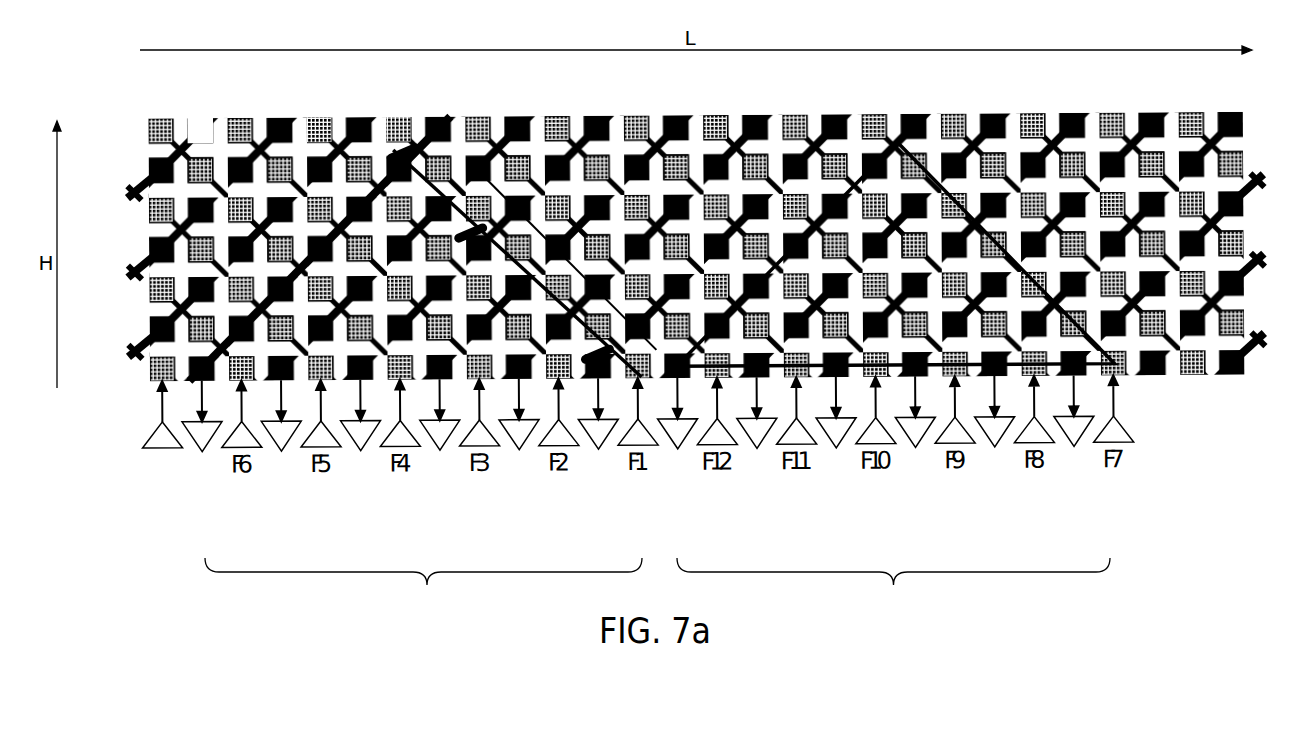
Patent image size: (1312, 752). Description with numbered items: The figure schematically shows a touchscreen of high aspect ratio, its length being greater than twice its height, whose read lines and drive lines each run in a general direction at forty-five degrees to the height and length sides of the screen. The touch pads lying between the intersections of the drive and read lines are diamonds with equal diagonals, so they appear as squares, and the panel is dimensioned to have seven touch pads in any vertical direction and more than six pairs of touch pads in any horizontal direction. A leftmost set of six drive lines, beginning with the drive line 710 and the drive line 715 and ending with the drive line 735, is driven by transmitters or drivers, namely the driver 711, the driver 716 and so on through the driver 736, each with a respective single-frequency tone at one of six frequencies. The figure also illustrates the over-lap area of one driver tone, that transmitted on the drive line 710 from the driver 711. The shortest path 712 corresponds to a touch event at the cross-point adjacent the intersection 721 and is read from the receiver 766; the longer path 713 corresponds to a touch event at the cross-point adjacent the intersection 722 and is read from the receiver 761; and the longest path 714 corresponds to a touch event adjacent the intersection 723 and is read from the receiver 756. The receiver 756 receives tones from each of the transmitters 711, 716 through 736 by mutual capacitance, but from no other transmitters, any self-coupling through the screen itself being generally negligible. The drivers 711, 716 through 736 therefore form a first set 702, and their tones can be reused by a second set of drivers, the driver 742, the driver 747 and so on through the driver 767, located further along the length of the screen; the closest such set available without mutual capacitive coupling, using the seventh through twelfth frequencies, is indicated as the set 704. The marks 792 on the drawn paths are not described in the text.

The first set of drivers 702 is at (423, 590).
The second set of drivers 704 is at (893, 590).
The drive line 710 is at (393, 113).
The driver 711 is at (657, 450).
The shortest path 712 is at (636, 382).
The longer path 713 is at (406, 388).
The longest path 714 is at (324, 388).
The drive line 715 is at (316, 112).
The driver 716 is at (542, 452).
The intersection 721 is at (627, 382).
The intersection 722 is at (512, 190).
The intersection 723 is at (455, 122).
The drive line 735 is at (113, 242).
The driver 736 is at (230, 452).
The driver 742 is at (1100, 447).
The driver 747 is at (1018, 447).
The receiver 756 is at (195, 450).
The receiver 761 is at (285, 452).
The receiver 766 is at (590, 448).
The driver 767 is at (740, 450).
The coupling element 792 is at (413, 137).